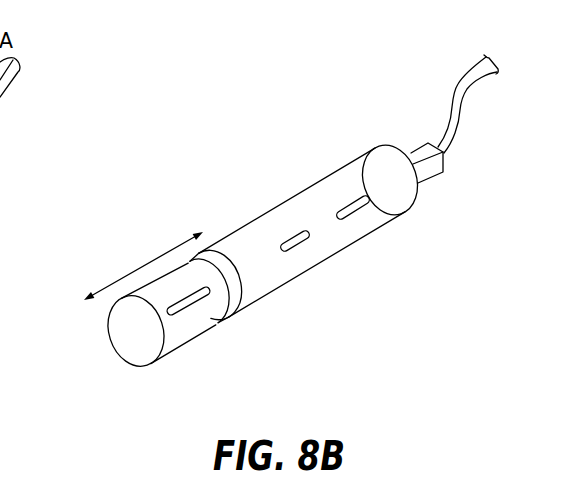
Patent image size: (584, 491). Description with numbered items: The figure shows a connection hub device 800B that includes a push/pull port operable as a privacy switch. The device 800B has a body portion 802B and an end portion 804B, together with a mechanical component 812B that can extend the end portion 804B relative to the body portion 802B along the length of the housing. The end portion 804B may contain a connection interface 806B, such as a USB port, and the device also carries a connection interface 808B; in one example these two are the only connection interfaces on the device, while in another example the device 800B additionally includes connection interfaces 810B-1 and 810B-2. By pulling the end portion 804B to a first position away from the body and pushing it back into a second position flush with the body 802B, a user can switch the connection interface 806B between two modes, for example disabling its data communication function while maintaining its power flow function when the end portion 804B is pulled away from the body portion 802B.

The connection hub device 800B is at (274, 91).
The body portion 802B is at (238, 229).
The end portion 804B is at (118, 335).
The connection interface 806B is at (197, 318).
The connection interface 808B is at (455, 83).
The connection interface 810B-1 is at (297, 249).
The connection interface 810B-2 is at (357, 213).
The mechanical component 812B is at (231, 315).